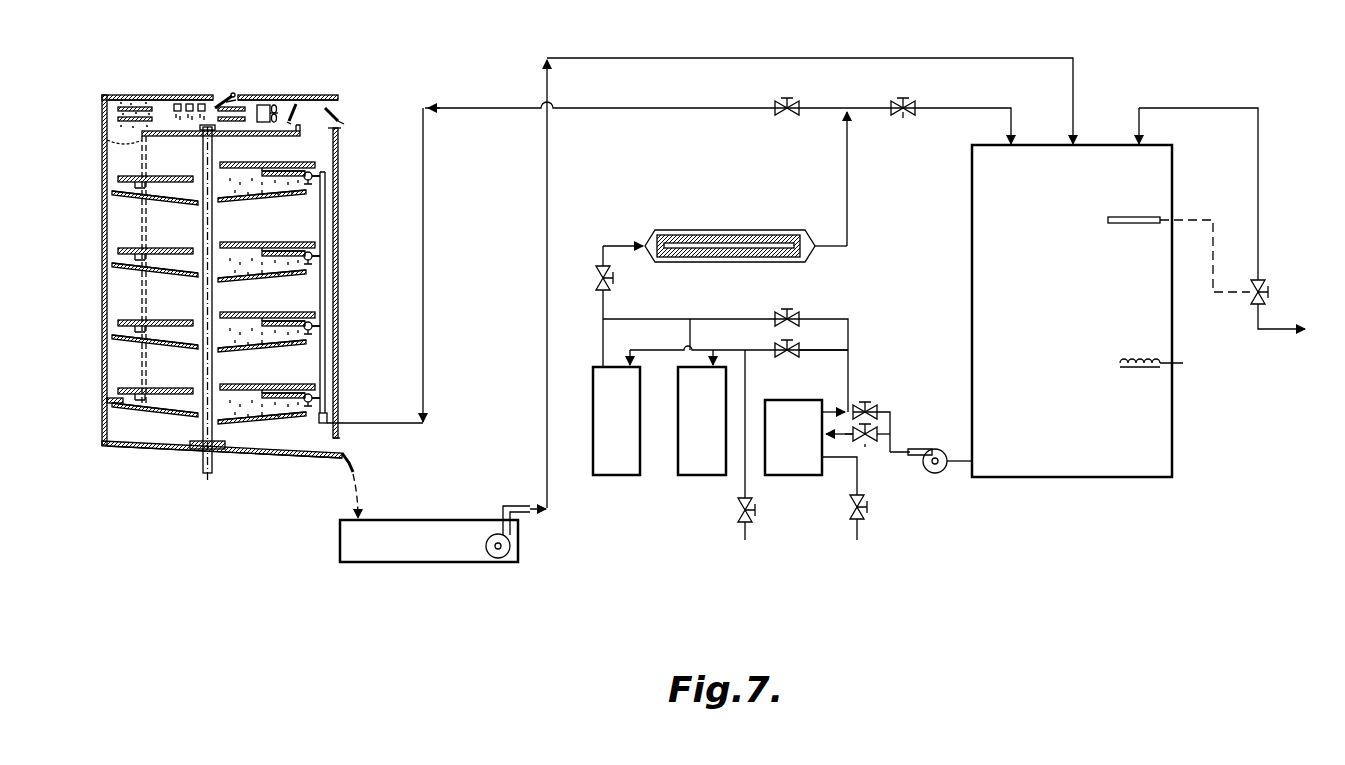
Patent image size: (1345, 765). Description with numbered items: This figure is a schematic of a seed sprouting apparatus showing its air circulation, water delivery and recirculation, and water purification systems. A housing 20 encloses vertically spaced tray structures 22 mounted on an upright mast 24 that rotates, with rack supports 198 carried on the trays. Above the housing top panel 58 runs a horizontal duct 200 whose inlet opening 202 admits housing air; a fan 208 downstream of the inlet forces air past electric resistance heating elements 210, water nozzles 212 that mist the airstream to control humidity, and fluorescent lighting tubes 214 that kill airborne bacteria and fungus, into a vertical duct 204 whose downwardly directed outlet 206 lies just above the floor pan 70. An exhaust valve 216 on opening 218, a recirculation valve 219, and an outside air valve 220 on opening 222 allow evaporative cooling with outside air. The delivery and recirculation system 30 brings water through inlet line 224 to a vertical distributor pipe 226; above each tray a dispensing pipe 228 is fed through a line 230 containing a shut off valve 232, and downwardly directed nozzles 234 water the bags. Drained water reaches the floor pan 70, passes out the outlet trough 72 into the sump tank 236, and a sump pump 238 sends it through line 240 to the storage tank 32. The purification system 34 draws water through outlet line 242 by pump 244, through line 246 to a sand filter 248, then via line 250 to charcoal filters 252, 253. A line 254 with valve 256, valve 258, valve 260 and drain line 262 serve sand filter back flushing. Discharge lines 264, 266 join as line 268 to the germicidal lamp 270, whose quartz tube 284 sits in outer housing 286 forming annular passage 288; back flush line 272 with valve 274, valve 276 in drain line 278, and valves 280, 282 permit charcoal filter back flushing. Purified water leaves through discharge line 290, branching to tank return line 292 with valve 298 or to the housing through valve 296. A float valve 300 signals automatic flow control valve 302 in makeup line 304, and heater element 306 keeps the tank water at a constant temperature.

The housing 20 is at (100, 207).
The tray structures 22 is at (160, 206).
The upright mast 24 is at (205, 435).
The delivery and recirculation system 30 is at (336, 290).
The storage tank 32 is at (1100, 145).
The purification system 34 is at (660, 490).
The housing top panel 58 is at (108, 95).
The housing floor pan 70 is at (265, 462).
The outlet trough 72 is at (342, 465).
The trays 198 is at (168, 177).
The horizontal duct 200 is at (160, 95).
The inlet opening 202 is at (318, 130).
The vertical duct 204 is at (110, 142).
The downwardly directed outlet 206 is at (118, 403).
The fan 208 is at (268, 110).
The electric resistance heating elements 210 is at (240, 110).
The water nozzles 212 is at (198, 104).
The fluorescent lighting tubes 214 is at (135, 107).
The exhaust valve 216 is at (340, 124).
The exhaust opening 218 is at (340, 114).
The recirculation valve 219 is at (300, 106).
The outside air valve 220 is at (232, 100).
The outside air opening 222 is at (218, 98).
The water inlet line 224 is at (400, 424).
The distributor pipe 226 is at (327, 312).
The dispensing pipe 228 is at (236, 163).
The line 230 is at (305, 176).
The flow control shut off valve 232 is at (313, 176).
The nozzles 234 is at (242, 168).
The sump tank 236 is at (418, 564).
The sump pump 238 is at (512, 550).
The line 240 is at (630, 58).
The outlet line 242 is at (958, 468).
The pump 244 is at (937, 475).
The line 246 is at (886, 432).
The sand filter 248 is at (795, 477).
The line 250 is at (822, 352).
The charcoal filter 252 is at (700, 477).
The charcoal filter 253 is at (592, 446).
The line 254 is at (880, 412).
The valve 256 is at (870, 404).
The valve 258 is at (868, 442).
The valve 260 is at (865, 522).
The sand filter drain line 262 is at (845, 458).
The discharge line 264 is at (688, 333).
The discharge line 266 is at (600, 343).
The line 268 is at (603, 250).
The germicidal lamp 270 is at (652, 226).
The back flush line 272 is at (848, 322).
The valve 274 is at (796, 312).
The valve 276 is at (755, 520).
The drain line 278 is at (742, 482).
The valve 280 is at (782, 360).
The valve 282 is at (609, 287).
The quartz tube 284 is at (770, 238).
The outer housing 286 is at (660, 235).
The annular passage 288 is at (705, 240).
The discharge line 290 is at (848, 208).
The tank return line 292 is at (876, 108).
The valve 296 is at (786, 100).
The valve 298 is at (903, 120).
The float valve 300 is at (1150, 218).
The automatic flow control valve 302 is at (1268, 286).
The water makeup line 304 is at (1270, 175).
The heater element 306 is at (1165, 358).